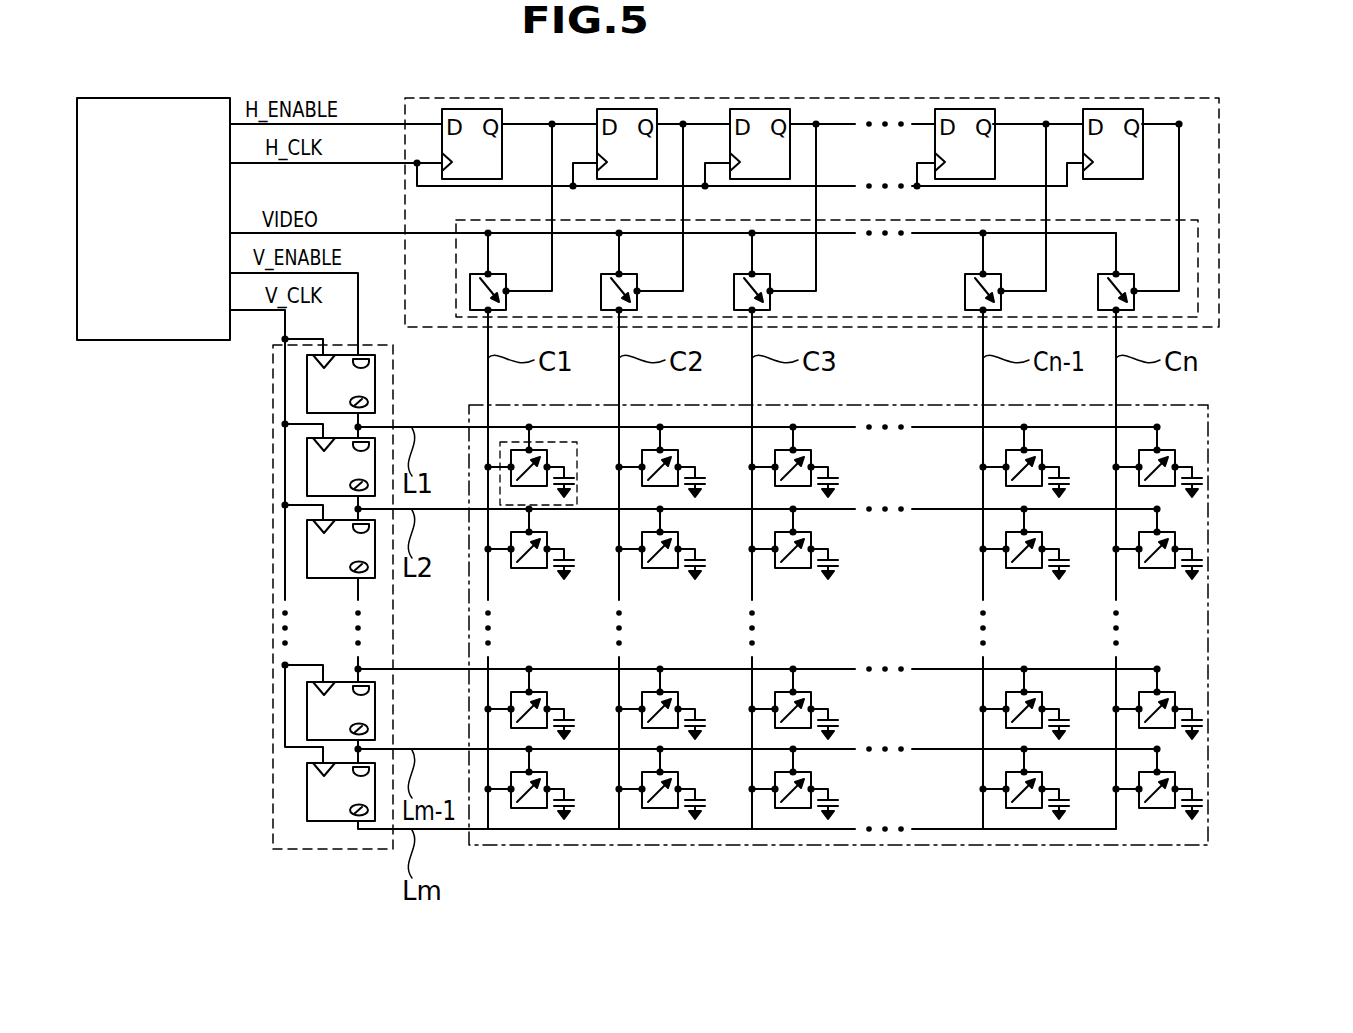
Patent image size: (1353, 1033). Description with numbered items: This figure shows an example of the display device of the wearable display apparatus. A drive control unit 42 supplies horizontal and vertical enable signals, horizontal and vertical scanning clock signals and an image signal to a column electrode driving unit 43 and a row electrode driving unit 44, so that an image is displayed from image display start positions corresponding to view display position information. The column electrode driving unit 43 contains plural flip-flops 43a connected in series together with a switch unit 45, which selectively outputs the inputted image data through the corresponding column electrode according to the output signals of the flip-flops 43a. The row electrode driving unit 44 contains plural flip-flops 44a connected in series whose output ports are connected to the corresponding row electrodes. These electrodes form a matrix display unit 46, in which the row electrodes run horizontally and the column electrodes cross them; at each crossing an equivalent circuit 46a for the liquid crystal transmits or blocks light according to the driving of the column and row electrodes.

The drive control unit 42 is at (152, 343).
The column electrode driving unit 43 is at (874, 179).
The flip-flop 43a is at (757, 108).
The row electrode driving unit 44 is at (309, 592).
The flip-flop 44a is at (307, 380).
The switch unit 45 is at (1198, 265).
The matrix display unit 46 is at (899, 625).
The equivalent circuit 46a is at (578, 481).